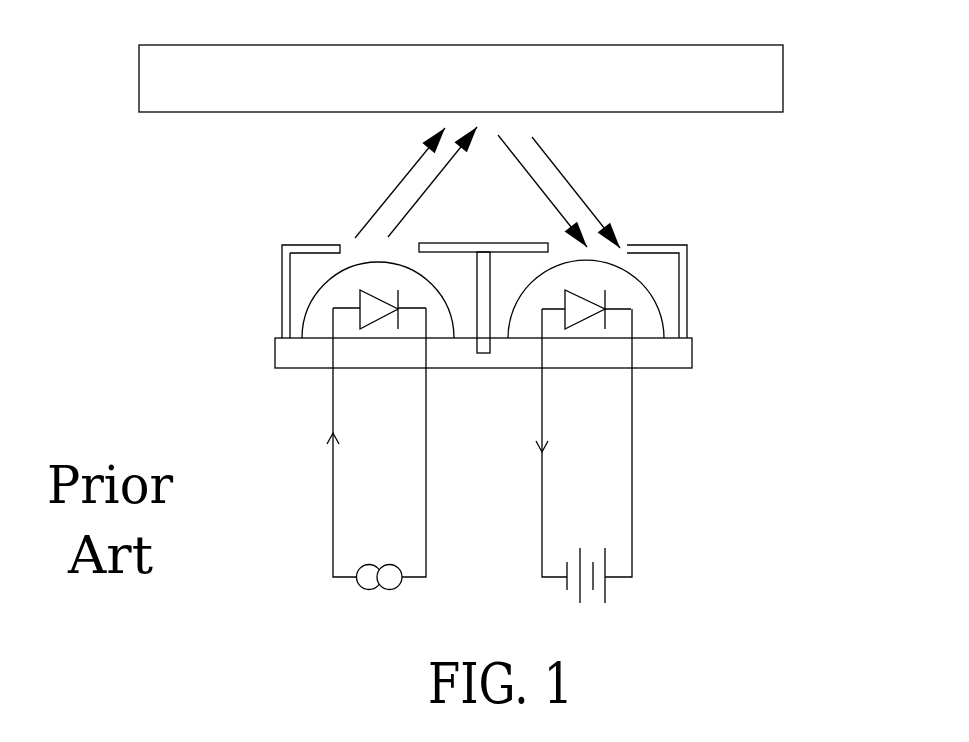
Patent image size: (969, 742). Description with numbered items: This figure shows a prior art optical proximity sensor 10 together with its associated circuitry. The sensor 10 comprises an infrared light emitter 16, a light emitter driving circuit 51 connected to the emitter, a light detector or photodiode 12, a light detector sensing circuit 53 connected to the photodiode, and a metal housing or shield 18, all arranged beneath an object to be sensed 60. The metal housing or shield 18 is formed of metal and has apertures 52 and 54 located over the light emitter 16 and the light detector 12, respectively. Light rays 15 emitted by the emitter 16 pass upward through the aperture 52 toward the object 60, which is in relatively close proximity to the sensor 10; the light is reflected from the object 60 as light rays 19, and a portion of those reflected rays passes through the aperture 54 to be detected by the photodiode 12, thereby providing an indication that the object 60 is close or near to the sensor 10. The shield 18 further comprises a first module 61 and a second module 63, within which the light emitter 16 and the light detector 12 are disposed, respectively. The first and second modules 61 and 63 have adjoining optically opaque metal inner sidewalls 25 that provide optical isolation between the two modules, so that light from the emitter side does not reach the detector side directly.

The optical proximity sensor 10 is at (122, 241).
The photodiode 12 is at (616, 302).
The light rays 15 is at (427, 186).
The infrared light emitter 16 is at (345, 300).
The metal housing or shield 18 is at (266, 300).
The light rays 19 is at (546, 200).
The optically opaque metal inner sidewalls 25 is at (480, 307).
The light emitter driving circuit 51 is at (333, 517).
The aperture 52 is at (351, 250).
The light detector sensing circuit 53 is at (632, 470).
The aperture 54 is at (622, 249).
The object to be sensed 60 is at (783, 75).
The first module 61 is at (300, 243).
The second module 63 is at (673, 246).